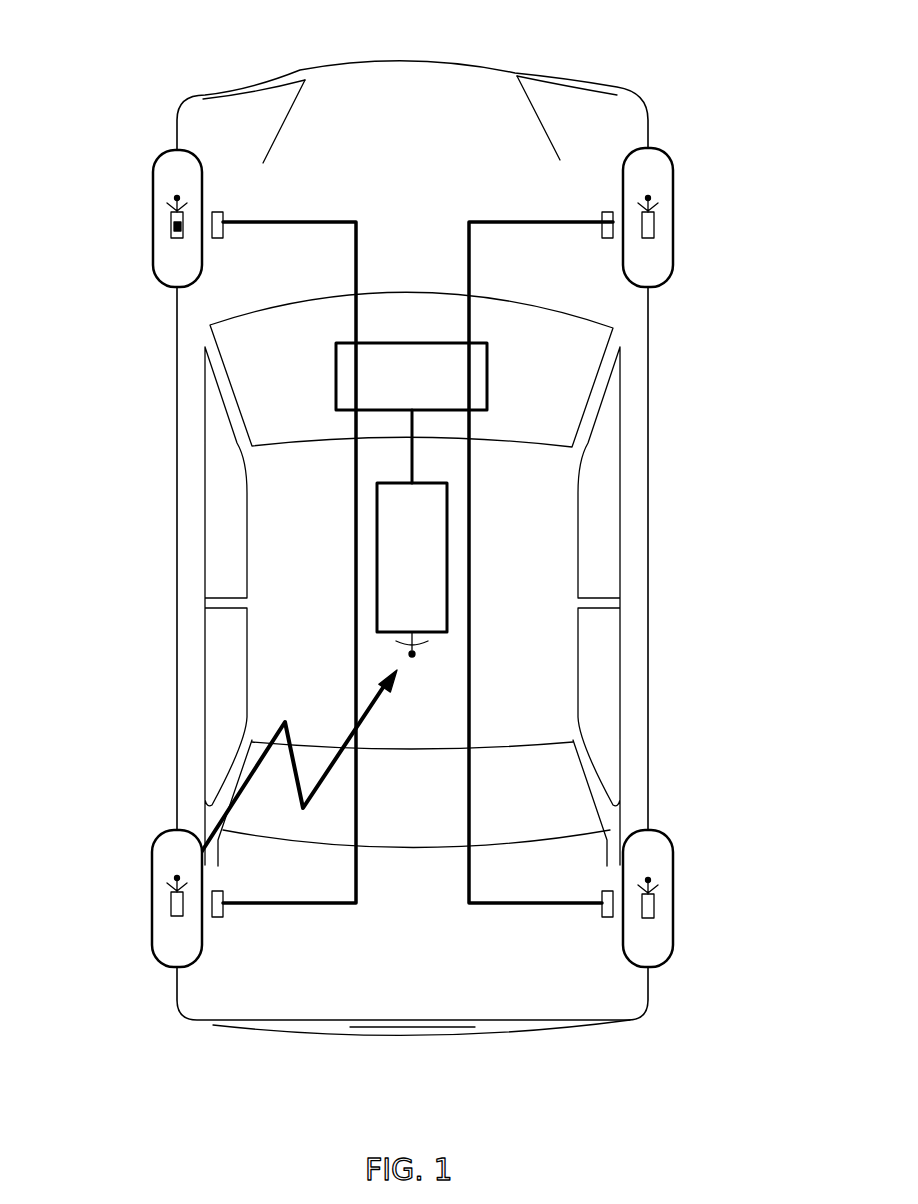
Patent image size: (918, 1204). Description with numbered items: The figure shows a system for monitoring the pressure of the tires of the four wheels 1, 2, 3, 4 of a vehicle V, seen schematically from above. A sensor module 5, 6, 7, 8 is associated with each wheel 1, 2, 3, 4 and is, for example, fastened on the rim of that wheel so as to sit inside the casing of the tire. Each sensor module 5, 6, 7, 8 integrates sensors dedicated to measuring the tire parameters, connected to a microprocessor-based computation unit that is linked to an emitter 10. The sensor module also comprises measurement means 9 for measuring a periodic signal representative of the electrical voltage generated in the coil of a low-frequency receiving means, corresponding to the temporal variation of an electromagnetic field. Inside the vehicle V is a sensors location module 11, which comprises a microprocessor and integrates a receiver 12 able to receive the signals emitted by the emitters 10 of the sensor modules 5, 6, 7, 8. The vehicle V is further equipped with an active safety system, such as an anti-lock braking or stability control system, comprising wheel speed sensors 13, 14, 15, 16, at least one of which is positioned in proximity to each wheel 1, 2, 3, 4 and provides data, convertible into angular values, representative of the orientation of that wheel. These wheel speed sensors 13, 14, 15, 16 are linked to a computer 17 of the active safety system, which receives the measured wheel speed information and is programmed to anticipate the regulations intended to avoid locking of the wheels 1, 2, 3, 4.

The wheel 1 is at (158, 213).
The wheel 2 is at (668, 212).
The wheel 3 is at (156, 893).
The wheel 4 is at (668, 893).
The sensor module 5 is at (172, 236).
The sensor module 6 is at (655, 230).
The sensor module 7 is at (172, 908).
The sensor module 8 is at (655, 912).
The measurement means 9 is at (177, 248).
The emitter 10 is at (172, 198).
The sensors location module 11 is at (386, 600).
The receiver 12 is at (410, 655).
The wheel speed sensor 13 is at (219, 211).
The wheel speed sensor 14 is at (606, 211).
The wheel speed sensor 15 is at (226, 918).
The wheel speed sensor 16 is at (605, 915).
The ABS or ESP computer 17 is at (438, 387).
The vehicle V is at (630, 478).